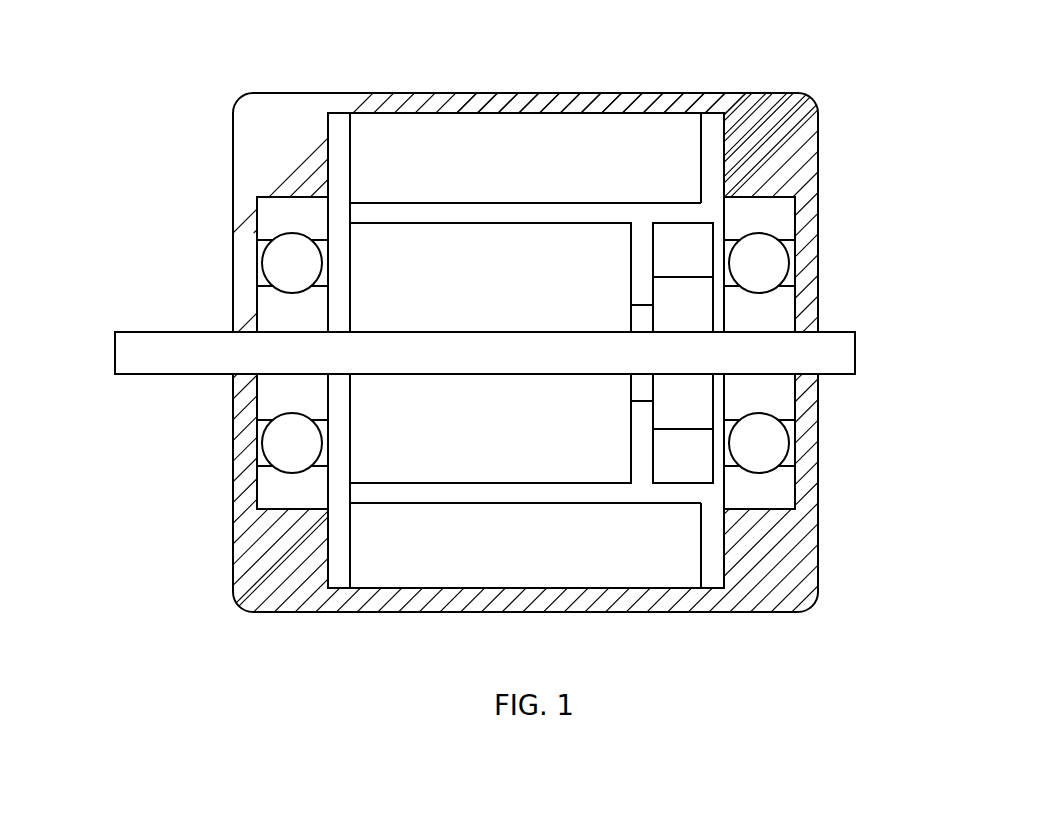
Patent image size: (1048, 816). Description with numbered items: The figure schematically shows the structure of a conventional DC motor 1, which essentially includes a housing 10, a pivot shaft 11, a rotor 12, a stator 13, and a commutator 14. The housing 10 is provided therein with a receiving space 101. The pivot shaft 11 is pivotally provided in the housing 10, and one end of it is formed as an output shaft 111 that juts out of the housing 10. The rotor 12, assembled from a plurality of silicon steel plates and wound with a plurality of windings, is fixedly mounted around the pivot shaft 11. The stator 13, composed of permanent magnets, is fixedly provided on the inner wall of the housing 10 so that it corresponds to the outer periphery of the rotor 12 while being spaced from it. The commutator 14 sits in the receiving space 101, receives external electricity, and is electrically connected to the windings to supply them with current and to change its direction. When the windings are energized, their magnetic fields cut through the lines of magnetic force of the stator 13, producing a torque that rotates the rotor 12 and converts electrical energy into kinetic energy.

The conventional DC motor 1 is at (970, 133).
The housing 10 is at (278, 116).
The receiving space 101 is at (337, 130).
The pivot shaft 11 is at (845, 357).
The output shaft 111 is at (162, 350).
The rotor 12 is at (493, 275).
The stator 13 is at (613, 143).
The commutator 14 is at (692, 315).